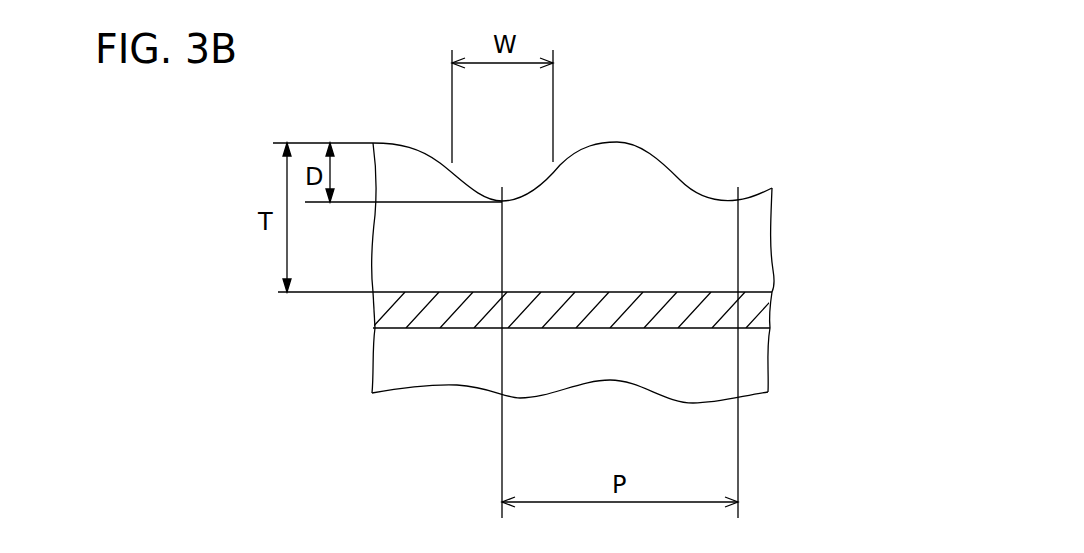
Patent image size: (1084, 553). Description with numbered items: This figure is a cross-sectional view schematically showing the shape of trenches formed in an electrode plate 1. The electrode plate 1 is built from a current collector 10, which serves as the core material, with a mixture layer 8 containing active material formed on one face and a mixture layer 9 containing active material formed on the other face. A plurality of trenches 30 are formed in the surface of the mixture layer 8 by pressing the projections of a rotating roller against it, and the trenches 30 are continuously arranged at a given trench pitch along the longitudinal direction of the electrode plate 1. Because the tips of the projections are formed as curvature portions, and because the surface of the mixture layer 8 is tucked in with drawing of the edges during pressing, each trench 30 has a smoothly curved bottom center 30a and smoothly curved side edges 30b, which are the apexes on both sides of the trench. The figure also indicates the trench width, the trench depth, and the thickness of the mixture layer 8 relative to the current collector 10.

The electrode plate 1 is at (257, 327).
The mixture layer 8 is at (437, 262).
The current collector 10 is at (402, 313).
The mixture layer 9 is at (423, 368).
The trench 30 is at (845, 52).
The bottom center 30a is at (520, 208).
The side edge 30b is at (442, 180).